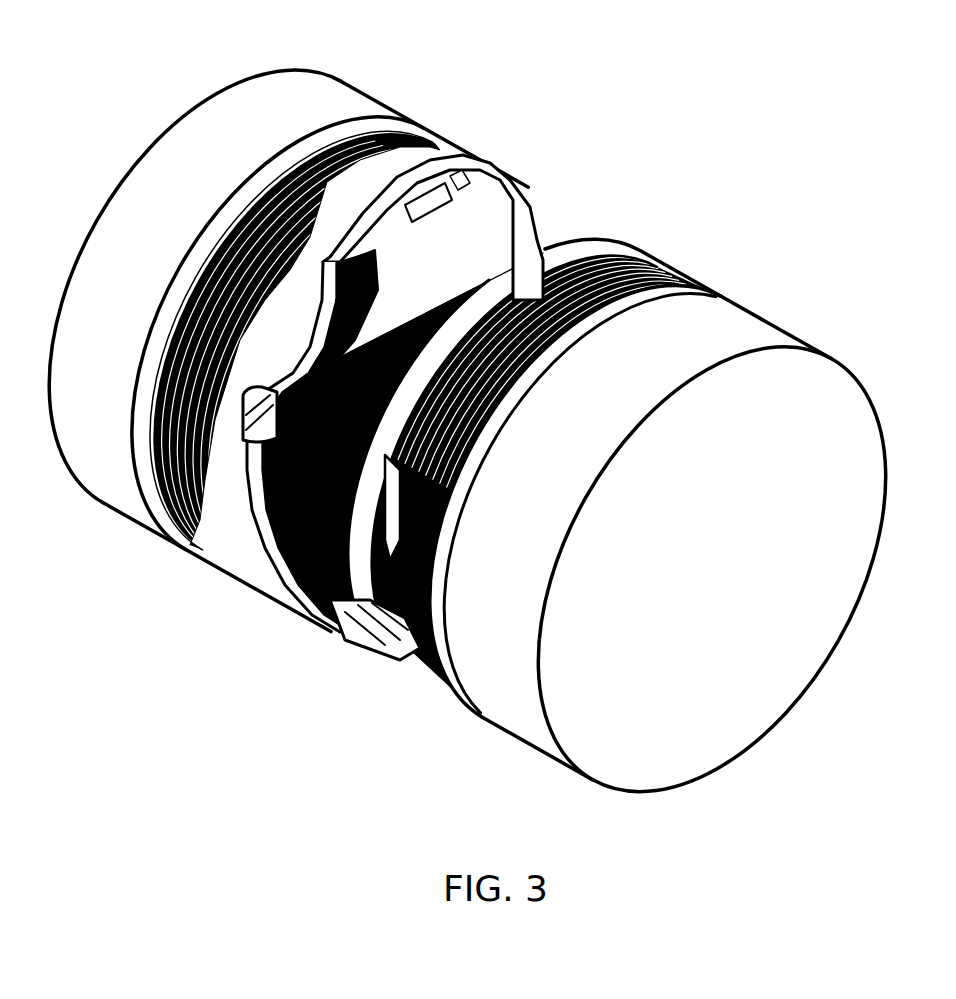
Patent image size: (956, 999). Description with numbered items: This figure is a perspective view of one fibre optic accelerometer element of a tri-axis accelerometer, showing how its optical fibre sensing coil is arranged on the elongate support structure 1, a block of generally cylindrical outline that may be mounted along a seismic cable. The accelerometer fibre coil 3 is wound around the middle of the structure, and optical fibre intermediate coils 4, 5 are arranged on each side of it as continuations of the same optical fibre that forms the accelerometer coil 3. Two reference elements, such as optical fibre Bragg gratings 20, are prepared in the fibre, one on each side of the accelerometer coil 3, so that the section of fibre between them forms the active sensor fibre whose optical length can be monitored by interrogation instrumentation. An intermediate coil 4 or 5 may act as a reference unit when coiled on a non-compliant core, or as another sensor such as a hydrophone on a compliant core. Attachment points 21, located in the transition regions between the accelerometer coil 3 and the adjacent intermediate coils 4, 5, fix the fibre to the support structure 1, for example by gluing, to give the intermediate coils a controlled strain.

The elongate support structure 1 is at (367, 87).
The accelerometer fibre coil 3 is at (547, 247).
The intermediate coil 4 is at (677, 287).
The intermediate coil 5 is at (425, 140).
The fibre Bragg grating 20 is at (397, 547).
The attachment point 21 is at (450, 183).